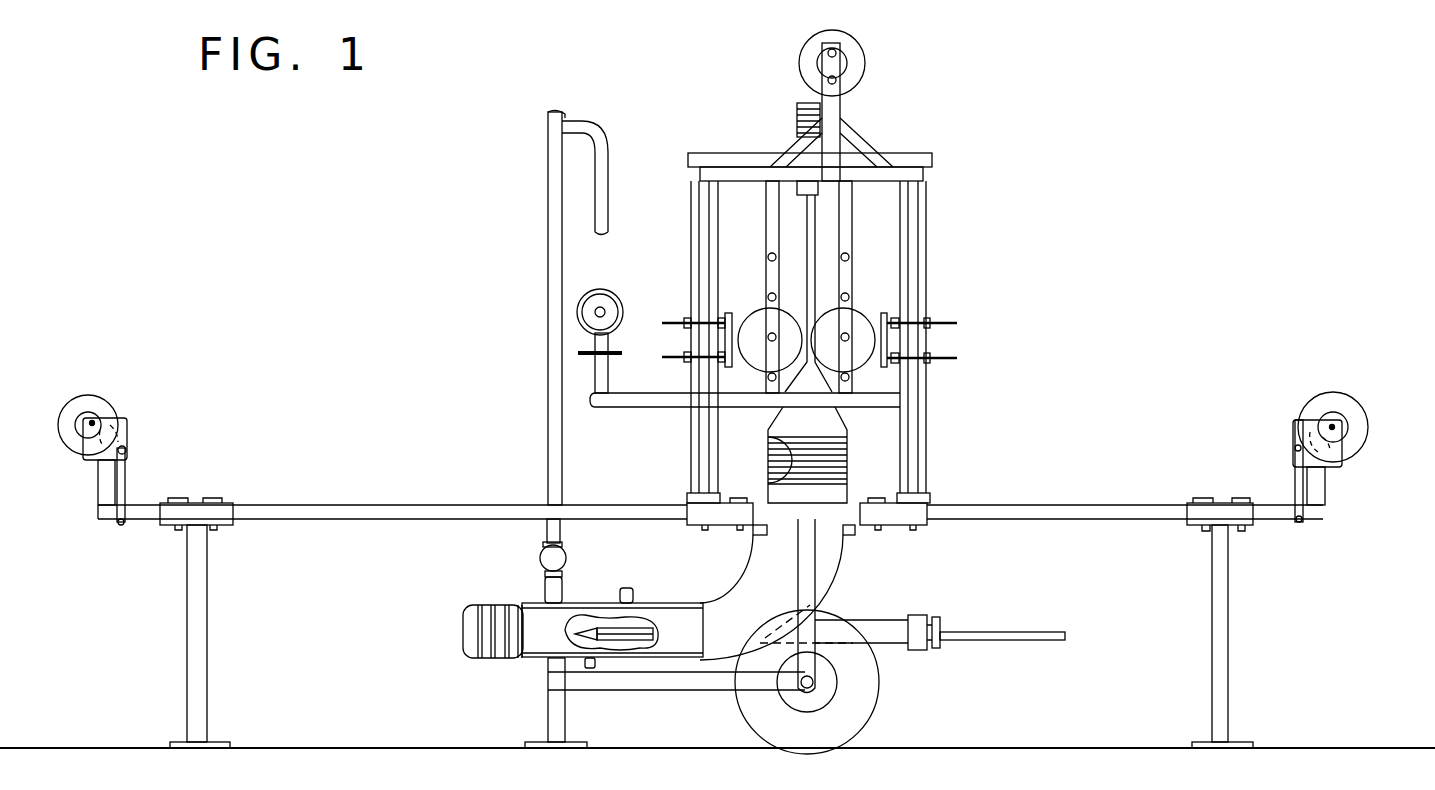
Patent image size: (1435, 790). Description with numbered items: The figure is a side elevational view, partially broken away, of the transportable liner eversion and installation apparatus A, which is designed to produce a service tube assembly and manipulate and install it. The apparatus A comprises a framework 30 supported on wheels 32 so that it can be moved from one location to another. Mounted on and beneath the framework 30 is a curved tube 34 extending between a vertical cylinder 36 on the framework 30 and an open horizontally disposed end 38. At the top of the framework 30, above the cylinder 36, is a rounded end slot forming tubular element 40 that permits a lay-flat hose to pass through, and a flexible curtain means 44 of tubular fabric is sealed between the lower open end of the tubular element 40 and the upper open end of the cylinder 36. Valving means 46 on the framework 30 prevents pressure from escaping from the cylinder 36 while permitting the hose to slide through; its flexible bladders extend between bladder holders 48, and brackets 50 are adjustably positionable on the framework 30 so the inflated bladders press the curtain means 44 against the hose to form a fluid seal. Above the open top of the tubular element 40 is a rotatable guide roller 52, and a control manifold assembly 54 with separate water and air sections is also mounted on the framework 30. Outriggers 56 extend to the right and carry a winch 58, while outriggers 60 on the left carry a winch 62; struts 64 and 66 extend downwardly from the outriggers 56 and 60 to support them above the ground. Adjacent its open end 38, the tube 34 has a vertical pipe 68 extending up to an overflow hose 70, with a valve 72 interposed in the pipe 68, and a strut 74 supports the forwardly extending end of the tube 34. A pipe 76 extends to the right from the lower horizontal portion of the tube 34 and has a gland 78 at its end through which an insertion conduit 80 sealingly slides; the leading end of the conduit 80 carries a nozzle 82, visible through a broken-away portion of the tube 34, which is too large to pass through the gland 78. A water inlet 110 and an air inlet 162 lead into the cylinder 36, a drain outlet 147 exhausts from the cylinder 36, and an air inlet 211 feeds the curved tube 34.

The framework 30 is at (926, 425).
The wheels 32 is at (860, 707).
The curved tube 34 is at (820, 553).
The vertical cylinder 36 is at (825, 500).
The open horizontally disposed end 38 is at (470, 612).
The tubular element 40 is at (797, 125).
The flexible curtain means 44 is at (808, 233).
The valving means 46 is at (800, 305).
The bladder holders 48 is at (847, 287).
The brackets 50 is at (693, 338).
The rotatable guide roller 52 is at (866, 58).
The control manifold assembly 54 is at (616, 282).
The outriggers 56 is at (1062, 500).
The winch 58 is at (1339, 386).
The outriggers 60 is at (400, 497).
The winch 62 is at (115, 391).
The strut 64 is at (1228, 590).
The strut 66 is at (207, 610).
The vertical pipe 68 is at (548, 425).
The overflow hose 70 is at (604, 140).
The valve 72 is at (563, 556).
The strut 74 is at (547, 720).
The pipe 76 is at (880, 628).
The gland 78 is at (947, 617).
The insertion conduit 80 is at (1022, 620).
The nozzle 82 is at (587, 624).
The inlet 110 is at (763, 525).
The drain outlet 147 is at (590, 668).
The inlet 162 is at (849, 533).
The inlet 211 is at (633, 592).
The apparatus A is at (938, 306).